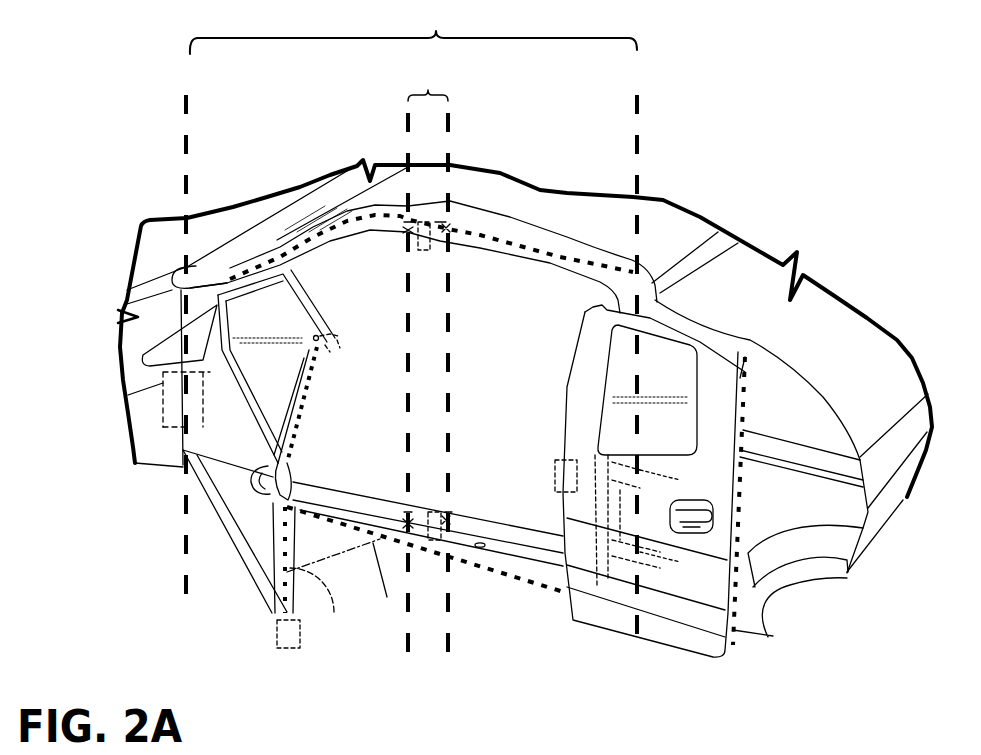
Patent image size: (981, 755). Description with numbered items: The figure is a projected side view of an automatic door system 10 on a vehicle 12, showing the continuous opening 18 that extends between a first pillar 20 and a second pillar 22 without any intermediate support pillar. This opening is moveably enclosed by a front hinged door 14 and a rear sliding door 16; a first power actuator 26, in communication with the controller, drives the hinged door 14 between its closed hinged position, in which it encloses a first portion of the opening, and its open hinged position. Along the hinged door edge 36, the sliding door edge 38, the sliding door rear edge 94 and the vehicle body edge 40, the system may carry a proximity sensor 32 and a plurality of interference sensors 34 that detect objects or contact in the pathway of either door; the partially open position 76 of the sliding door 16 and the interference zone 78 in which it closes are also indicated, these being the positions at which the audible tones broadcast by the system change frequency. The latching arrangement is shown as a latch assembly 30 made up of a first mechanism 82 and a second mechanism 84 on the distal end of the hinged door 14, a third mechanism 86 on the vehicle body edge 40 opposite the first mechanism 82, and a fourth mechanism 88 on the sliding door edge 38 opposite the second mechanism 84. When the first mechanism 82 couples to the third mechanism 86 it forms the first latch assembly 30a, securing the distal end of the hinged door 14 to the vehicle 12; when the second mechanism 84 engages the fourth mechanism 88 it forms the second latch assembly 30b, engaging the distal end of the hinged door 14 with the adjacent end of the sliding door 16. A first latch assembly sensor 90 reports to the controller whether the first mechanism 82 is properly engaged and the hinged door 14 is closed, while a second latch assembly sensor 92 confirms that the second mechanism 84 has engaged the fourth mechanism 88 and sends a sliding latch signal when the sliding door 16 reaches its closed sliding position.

The automatic door system 10 is at (130, 145).
The vehicle 12 is at (170, 245).
The hinged door 14 is at (248, 570).
The sliding door 16 is at (713, 367).
The continuous opening 18 is at (411, 324).
The first pillar 20 is at (177, 383).
The second pillar 22 is at (663, 282).
The first power actuator 26 is at (177, 423).
The latch assembly 30 is at (277, 240).
The first latch assembly 30a is at (310, 424).
The second latch assembly 30b is at (173, 515).
The proximity sensor 32 is at (343, 595).
The interference sensors 34 is at (513, 250).
The hinged door edge 36 is at (273, 617).
The sliding door edge 38 is at (573, 372).
The vehicle body edge 40 is at (365, 222).
The partially open position 76 is at (422, 360).
The interference zone 78 is at (446, 360).
The first mechanism 82 is at (344, 424).
The second mechanism 84 is at (185, 508).
The third mechanism 86 is at (396, 375).
The fourth mechanism 88 is at (560, 452).
The first latch assembly sensor 90 is at (466, 381).
The second latch assembly sensor 92 is at (609, 520).
The sliding door rear edge 94 is at (747, 382).